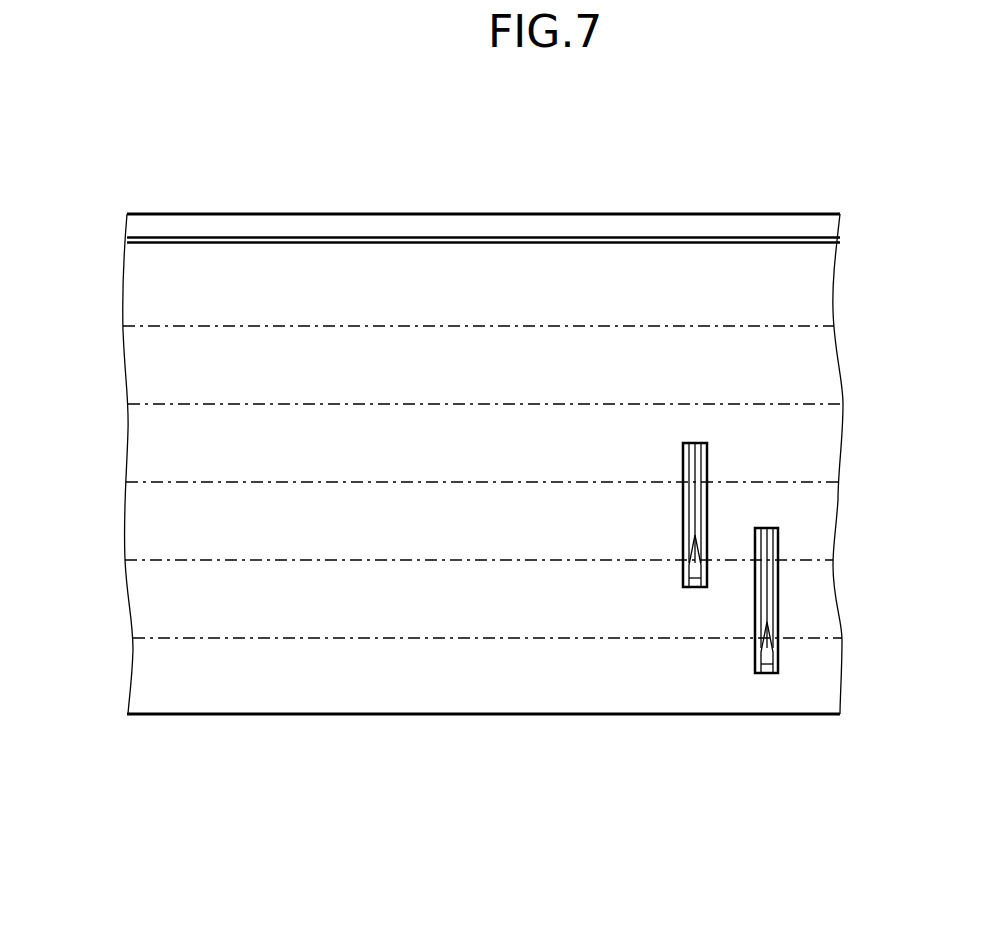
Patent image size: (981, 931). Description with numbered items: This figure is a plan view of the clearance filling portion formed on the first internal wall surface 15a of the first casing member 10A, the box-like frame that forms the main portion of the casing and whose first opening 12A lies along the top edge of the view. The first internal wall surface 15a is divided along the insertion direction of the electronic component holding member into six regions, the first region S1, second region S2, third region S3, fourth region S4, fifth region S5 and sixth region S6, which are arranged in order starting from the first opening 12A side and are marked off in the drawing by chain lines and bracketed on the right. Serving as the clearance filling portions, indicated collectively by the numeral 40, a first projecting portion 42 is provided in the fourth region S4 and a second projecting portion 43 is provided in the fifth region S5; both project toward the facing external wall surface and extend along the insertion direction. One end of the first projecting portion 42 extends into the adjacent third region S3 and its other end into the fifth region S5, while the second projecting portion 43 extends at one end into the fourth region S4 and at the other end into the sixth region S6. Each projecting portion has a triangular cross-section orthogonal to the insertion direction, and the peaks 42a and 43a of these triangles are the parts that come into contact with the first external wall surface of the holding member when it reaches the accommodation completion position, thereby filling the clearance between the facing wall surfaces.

The first casing member 10A is at (689, 152).
The first opening 12A is at (467, 214).
The first internal wall surface 15a is at (457, 693).
The electrode group 40 is at (707, 655).
The first projecting portion 42 is at (637, 630).
The peak of first projecting portion 42a is at (693, 502).
The second projecting portion 43 is at (777, 684).
The peak of second projecting portion 43a is at (768, 597).
The first region S1 is at (855, 253).
The second region S2 is at (855, 332).
The third region S3 is at (855, 410).
The fourth region S4 is at (855, 488).
The fifth region S5 is at (855, 566).
The sixth region S6 is at (855, 644).